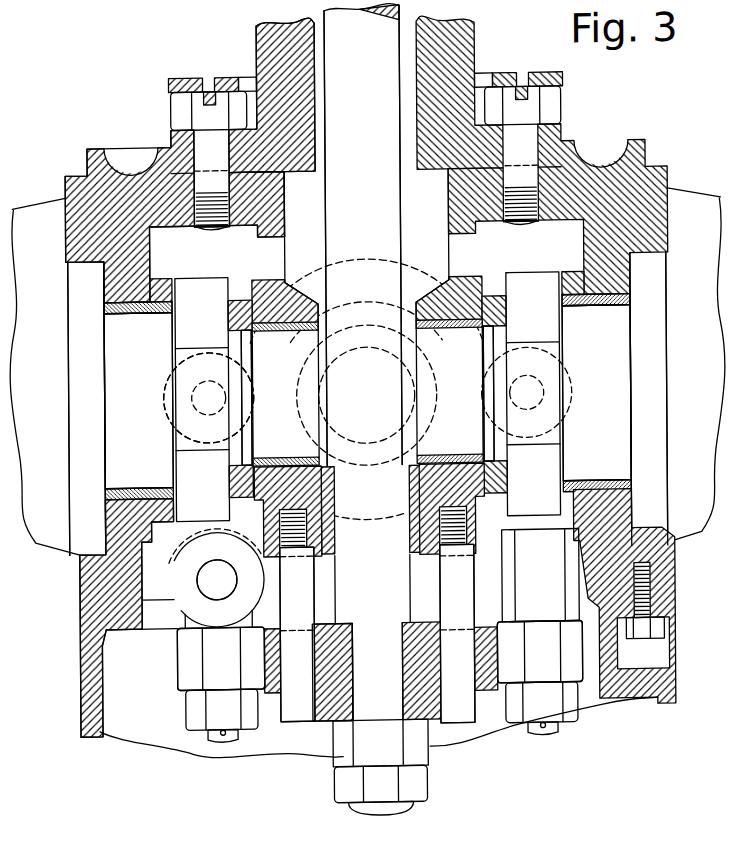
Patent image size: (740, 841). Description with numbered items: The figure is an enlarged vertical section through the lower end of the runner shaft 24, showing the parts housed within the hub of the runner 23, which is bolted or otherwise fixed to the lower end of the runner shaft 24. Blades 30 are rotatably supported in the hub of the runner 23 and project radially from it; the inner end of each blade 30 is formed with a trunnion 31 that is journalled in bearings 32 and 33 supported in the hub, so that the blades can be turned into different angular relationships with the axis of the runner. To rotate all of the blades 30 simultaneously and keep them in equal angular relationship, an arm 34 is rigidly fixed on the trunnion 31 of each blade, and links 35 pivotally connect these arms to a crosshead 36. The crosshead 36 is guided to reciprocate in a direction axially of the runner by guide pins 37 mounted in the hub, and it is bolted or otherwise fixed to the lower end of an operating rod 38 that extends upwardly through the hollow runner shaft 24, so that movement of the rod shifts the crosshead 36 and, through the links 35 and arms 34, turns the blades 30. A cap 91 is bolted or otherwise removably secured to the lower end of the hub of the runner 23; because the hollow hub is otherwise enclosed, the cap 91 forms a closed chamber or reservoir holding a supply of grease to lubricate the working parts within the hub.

The runner 23 is at (86, 170).
The runner shaft 24 is at (453, 47).
The blade 30 is at (369, 403).
The trunnion 31 is at (367, 397).
The bearing 32 is at (164, 314).
The bearing 33 is at (292, 331).
The arm 34 is at (193, 423).
The link 35 is at (582, 577).
The crosshead 36 is at (310, 708).
The guide pin 37 is at (377, 634).
The operating rod 38 is at (363, 236).
The cap 91 is at (78, 723).